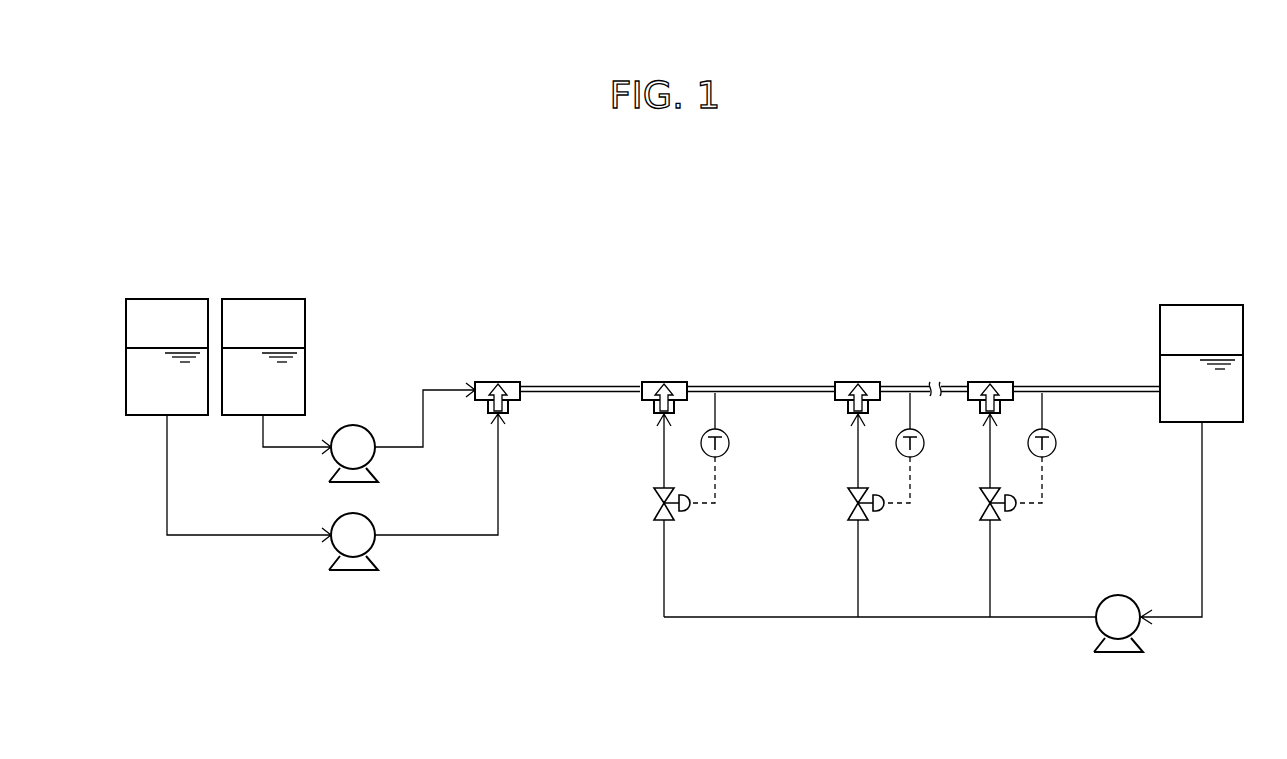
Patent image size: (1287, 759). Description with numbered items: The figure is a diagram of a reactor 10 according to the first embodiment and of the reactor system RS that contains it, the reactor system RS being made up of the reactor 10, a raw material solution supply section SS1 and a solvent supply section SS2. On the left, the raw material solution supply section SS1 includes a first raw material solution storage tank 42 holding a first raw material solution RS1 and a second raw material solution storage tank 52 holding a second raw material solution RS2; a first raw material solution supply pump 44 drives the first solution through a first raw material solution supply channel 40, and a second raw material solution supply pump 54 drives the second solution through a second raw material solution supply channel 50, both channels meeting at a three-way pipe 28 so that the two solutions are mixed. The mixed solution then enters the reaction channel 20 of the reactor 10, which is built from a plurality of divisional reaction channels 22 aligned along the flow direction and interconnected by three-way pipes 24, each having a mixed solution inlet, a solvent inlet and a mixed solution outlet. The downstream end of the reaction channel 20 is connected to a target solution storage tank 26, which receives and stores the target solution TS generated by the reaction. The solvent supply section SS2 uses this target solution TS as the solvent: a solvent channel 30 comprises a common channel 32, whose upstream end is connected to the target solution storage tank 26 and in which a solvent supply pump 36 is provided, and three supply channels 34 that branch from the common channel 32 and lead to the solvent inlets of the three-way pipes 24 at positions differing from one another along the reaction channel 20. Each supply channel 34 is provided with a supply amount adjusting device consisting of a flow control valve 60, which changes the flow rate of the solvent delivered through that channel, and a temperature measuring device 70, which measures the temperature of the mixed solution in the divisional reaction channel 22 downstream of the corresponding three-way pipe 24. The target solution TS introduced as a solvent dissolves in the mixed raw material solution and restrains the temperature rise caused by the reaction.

The reactor 10 is at (527, 310).
The reaction channel 20 is at (542, 403).
The divisional reaction channel 22 is at (760, 387).
The three-way pipe 24 is at (653, 386).
The target solution storage tank 26 is at (1200, 305).
The three-way pipe 28 is at (490, 382).
The solvent channel 30 is at (673, 622).
The common channel 32 is at (762, 620).
The supply channel 34 is at (663, 587).
The solvent supply pump 36 is at (1123, 594).
The first raw material solution supply channel 40 is at (398, 447).
The first raw material solution storage tank 42 is at (305, 317).
The first raw material solution supply pump 44 is at (362, 425).
The second raw material solution supply channel 50 is at (413, 535).
The second raw material solution storage tank 52 is at (126, 318).
The second raw material solution supply pump 54 is at (368, 518).
The flow control valve 60 is at (670, 520).
The temperature measuring device 70 is at (729, 445).
The reactor system RS is at (1005, 245).
The first raw material solution RS1 is at (297, 370).
The second raw material solution RS2 is at (133, 378).
The raw material solution supply section SS1 is at (273, 563).
The solvent supply section SS2 is at (1260, 417).
The target solution TS is at (1220, 412).